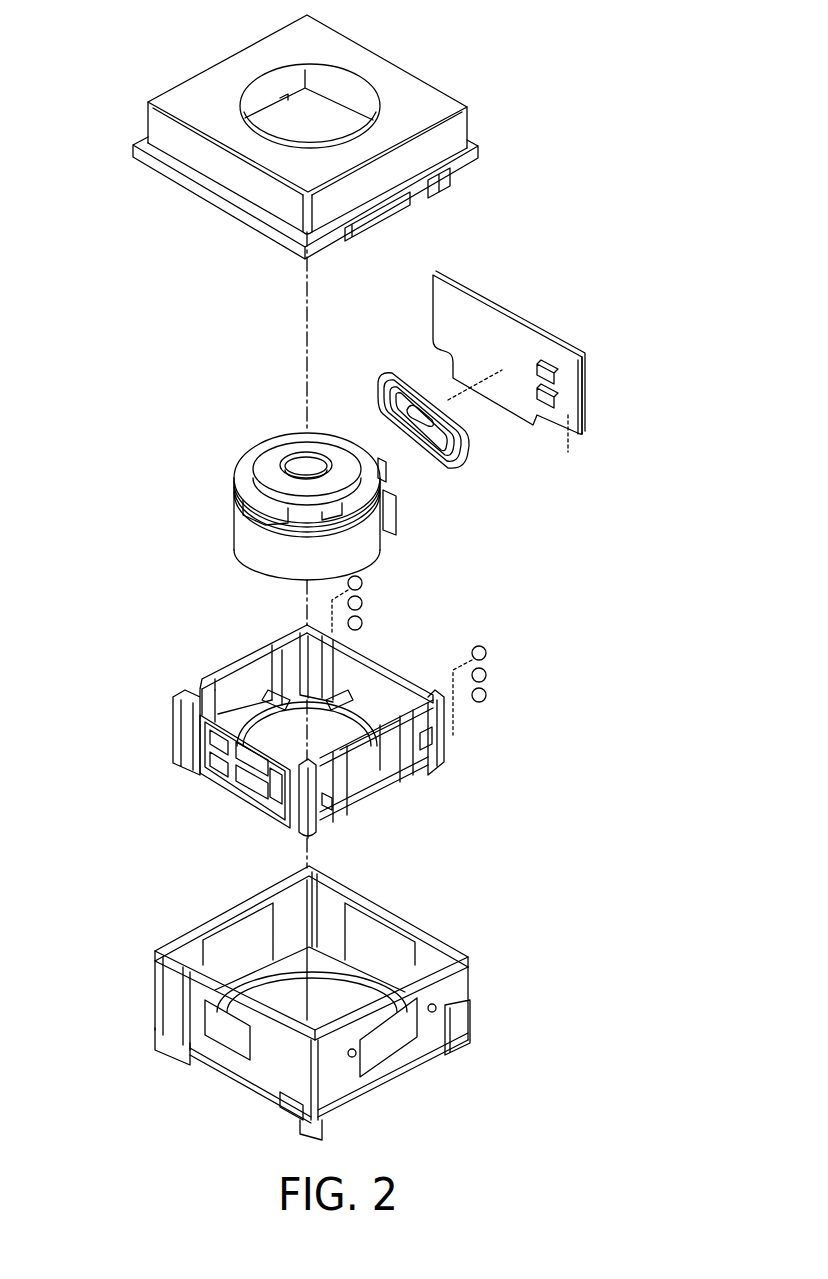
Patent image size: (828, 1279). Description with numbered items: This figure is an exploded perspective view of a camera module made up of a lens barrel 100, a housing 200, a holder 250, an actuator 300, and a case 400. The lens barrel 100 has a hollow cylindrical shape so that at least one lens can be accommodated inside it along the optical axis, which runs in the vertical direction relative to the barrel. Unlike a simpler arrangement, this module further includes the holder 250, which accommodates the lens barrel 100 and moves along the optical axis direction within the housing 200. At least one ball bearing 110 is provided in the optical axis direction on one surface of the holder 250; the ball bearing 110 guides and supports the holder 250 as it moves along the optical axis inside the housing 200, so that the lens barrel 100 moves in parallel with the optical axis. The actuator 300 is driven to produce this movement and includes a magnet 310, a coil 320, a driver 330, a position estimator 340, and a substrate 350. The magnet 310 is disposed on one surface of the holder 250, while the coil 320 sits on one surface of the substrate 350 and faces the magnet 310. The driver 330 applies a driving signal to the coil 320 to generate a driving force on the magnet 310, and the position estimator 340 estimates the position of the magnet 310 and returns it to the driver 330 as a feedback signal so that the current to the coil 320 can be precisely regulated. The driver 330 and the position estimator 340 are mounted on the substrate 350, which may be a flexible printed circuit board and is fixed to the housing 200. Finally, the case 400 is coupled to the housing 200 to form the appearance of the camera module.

The case 400 is at (157, 132).
The lens barrel 100 is at (234, 500).
The ball bearing 110 is at (485, 681).
The holder 250 is at (195, 742).
The housing 200 is at (162, 1008).
The actuator 300 is at (551, 468).
The magnet 310 is at (393, 665).
The coil 320 is at (465, 442).
The driver 330 is at (556, 383).
The position estimator 340 is at (556, 410).
The substrate 350 is at (568, 452).